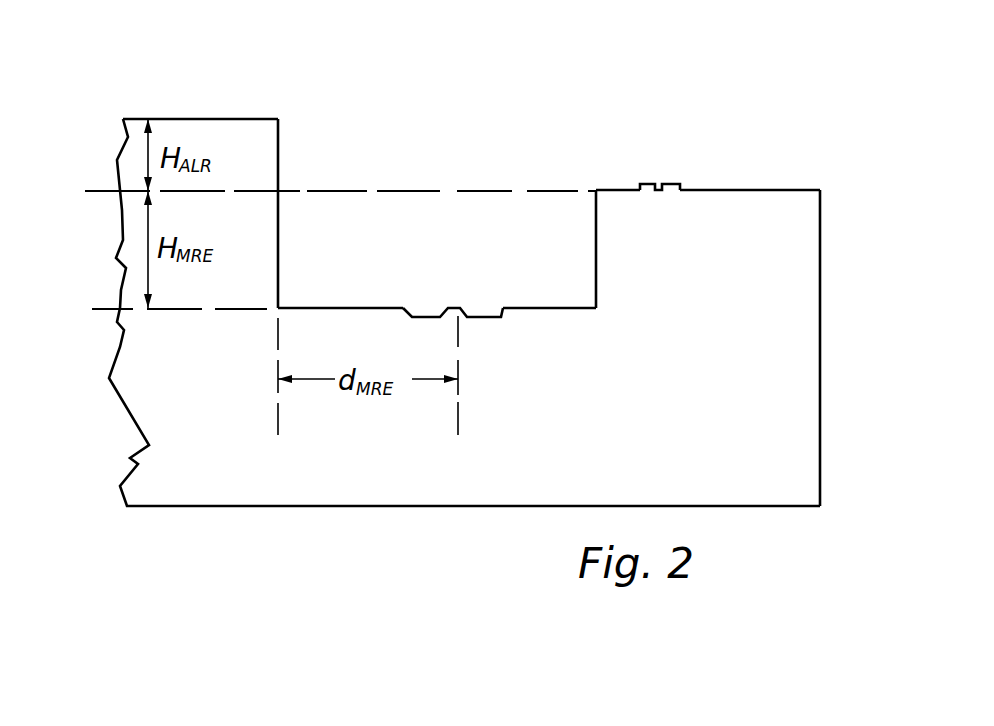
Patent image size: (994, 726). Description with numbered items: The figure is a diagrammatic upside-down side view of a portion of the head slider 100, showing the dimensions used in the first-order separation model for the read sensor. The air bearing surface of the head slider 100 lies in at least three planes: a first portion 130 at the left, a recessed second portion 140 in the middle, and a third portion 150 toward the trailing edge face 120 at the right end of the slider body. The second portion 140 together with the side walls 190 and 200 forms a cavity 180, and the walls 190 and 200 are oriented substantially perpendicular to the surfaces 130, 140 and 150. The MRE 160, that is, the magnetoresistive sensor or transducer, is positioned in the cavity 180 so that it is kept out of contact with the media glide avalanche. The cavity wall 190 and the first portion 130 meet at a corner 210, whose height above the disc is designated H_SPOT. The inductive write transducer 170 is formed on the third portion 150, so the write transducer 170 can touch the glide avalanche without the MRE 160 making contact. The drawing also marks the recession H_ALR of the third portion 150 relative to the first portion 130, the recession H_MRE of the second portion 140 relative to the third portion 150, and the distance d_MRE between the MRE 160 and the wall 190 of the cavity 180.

The head slider 100 is at (101, 98).
The trailing edge face 120 is at (820, 305).
The first portion of ABS 130 is at (160, 119).
The second portion of ABS 140 is at (325, 307).
The third portion of ABS 150 is at (740, 190).
The MRE 160 is at (455, 306).
The inductive write transducer 170 is at (657, 171).
The cavity 180 is at (445, 169).
The cavity wall 190 is at (278, 163).
The cavity wall 200 is at (597, 247).
The corner 210 is at (274, 119).